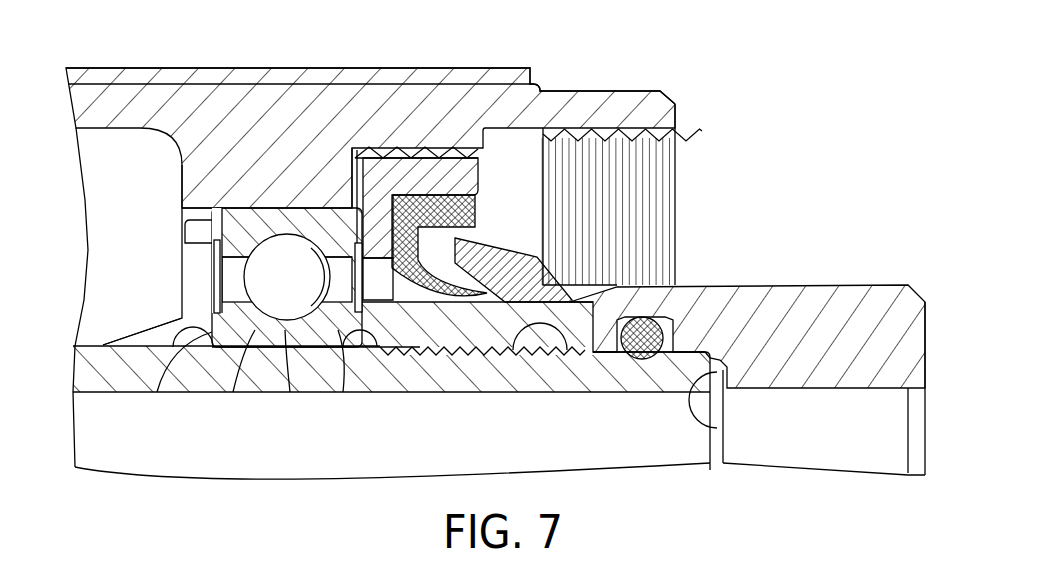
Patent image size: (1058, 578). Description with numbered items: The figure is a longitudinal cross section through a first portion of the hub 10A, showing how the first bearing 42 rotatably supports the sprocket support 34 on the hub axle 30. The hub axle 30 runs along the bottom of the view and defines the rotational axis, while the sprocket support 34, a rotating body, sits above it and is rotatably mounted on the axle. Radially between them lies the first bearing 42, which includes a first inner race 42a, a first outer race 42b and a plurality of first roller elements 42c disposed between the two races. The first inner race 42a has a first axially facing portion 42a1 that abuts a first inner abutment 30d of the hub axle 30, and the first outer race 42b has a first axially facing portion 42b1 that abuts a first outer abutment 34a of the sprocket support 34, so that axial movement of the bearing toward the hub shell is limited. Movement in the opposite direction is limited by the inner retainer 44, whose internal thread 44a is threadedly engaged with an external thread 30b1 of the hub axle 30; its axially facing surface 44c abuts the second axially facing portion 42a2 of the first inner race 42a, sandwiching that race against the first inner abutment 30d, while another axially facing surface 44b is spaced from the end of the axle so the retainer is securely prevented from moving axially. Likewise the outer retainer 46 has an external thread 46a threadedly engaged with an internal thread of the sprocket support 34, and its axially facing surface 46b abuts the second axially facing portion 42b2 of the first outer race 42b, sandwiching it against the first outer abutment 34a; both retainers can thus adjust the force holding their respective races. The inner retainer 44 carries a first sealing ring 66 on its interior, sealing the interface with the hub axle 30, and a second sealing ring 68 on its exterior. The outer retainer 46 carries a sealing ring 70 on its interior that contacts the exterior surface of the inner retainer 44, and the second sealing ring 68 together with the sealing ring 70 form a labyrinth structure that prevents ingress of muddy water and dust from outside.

The hub 10A is at (810, 103).
The sprocket support 34 is at (232, 48).
The first outer abutment 34a is at (243, 206).
The hub axle 30 is at (96, 346).
The first inner abutment 30d is at (228, 348).
The external thread 30b1 is at (565, 356).
The first bearing 42 is at (197, 267).
The first inner race 42a is at (288, 348).
The first axially facing portion 42a1 is at (152, 350).
The second axially facing portion 42a2 is at (404, 356).
The first outer race 42b is at (290, 206).
The first axially facing portion 42b1 is at (212, 225).
The second axially facing portion 42b2 is at (385, 198).
The first roller elements 42c is at (268, 283).
The inner retainer 44 is at (832, 266).
The internal thread 44a is at (474, 356).
The axially facing surface 44b is at (718, 425).
The axially facing surface 44c is at (340, 350).
The outer retainer 46 is at (485, 165).
The external thread 46a is at (440, 150).
The axially facing surface 46b is at (330, 205).
The first sealing ring 66 is at (642, 345).
The second sealing ring 68 is at (490, 250).
The sealing ring 70 is at (428, 205).